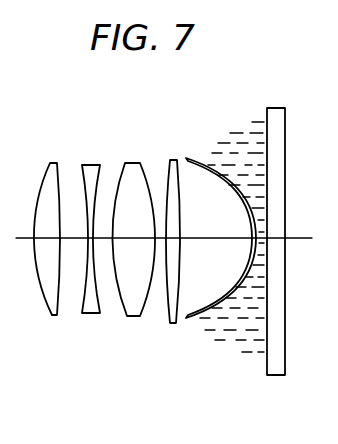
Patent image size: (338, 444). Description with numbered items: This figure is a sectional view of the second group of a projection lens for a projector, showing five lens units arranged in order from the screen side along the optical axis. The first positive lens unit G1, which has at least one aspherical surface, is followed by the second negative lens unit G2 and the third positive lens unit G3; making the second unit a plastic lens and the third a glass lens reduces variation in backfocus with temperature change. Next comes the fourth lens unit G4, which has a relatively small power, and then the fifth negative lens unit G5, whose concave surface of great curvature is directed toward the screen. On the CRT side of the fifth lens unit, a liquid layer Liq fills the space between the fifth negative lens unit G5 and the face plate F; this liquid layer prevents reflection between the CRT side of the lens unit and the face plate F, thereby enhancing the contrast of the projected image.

The first positive lens unit G1 is at (52, 316).
The second negative lens unit G2 is at (89, 313).
The third positive lens unit G3 is at (131, 317).
The fourth lens unit G4 is at (174, 324).
The fifth negative lens unit G5 is at (288, 383).
The liquid layer Liq is at (245, 160).
The face plate F is at (278, 113).